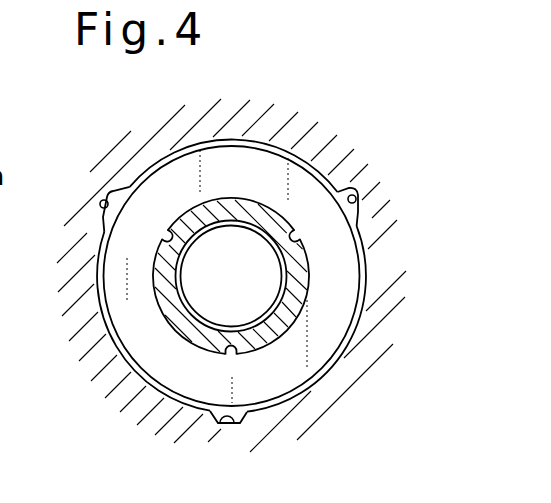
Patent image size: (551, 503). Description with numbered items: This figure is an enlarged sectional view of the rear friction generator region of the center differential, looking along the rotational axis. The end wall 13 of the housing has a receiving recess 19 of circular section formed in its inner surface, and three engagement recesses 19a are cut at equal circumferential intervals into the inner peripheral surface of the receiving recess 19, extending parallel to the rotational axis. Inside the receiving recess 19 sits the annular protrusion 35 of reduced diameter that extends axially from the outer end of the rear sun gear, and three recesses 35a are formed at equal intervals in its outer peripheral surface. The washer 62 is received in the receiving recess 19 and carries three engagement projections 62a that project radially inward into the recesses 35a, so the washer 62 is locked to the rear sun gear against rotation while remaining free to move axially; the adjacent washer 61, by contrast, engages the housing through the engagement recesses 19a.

The end wall 13 is at (293, 145).
The receiving recess 19 is at (308, 163).
The engagement recesses 19a is at (358, 197).
The annular protrusion 35 is at (285, 289).
The recesses 35a is at (165, 236).
The washer 61 is at (14, 305).
The washer 62 is at (223, 167).
The engagement projections 62a is at (154, 237).